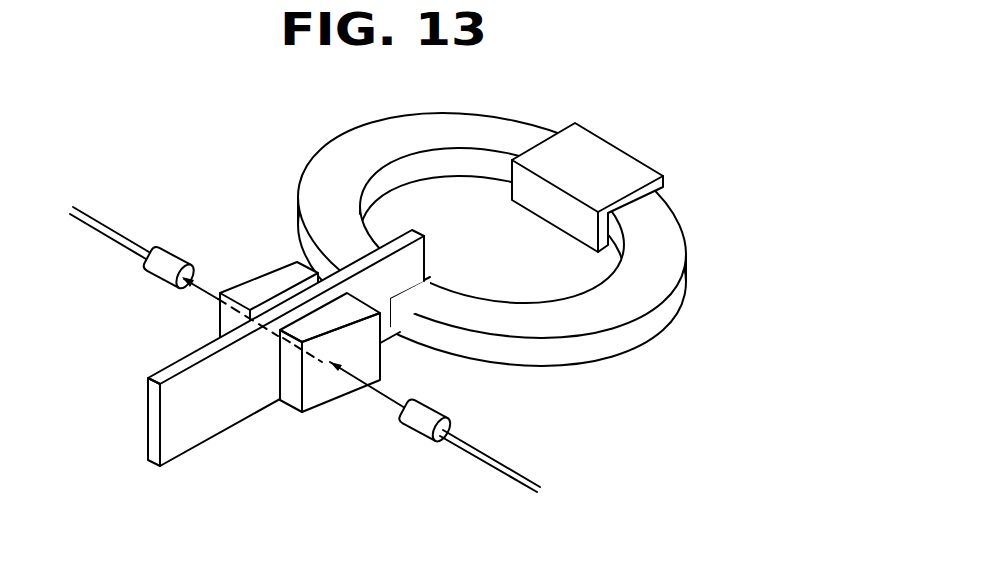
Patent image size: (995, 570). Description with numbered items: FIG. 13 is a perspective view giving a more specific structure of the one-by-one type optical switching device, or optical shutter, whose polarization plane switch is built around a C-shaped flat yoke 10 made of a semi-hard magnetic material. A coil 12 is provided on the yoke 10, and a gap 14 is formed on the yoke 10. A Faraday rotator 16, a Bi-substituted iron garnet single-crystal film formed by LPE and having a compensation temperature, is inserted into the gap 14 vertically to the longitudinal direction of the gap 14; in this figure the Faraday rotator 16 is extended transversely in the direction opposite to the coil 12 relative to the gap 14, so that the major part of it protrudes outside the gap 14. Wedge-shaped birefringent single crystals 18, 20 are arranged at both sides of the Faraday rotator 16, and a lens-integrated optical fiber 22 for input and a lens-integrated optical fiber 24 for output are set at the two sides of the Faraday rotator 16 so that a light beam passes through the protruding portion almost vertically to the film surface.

The flat yoke 10 is at (620, 312).
The coil 12 is at (610, 158).
The gap 14 is at (430, 277).
The Faraday rotator 16 is at (232, 407).
The wedge-shaped birefringent single crystal 18 is at (370, 358).
The wedge-shaped birefringent single crystal 20 is at (258, 287).
The lens-integrated optical fiber for input 22 is at (417, 425).
The lens-integrated optical fiber for output 24 is at (160, 270).